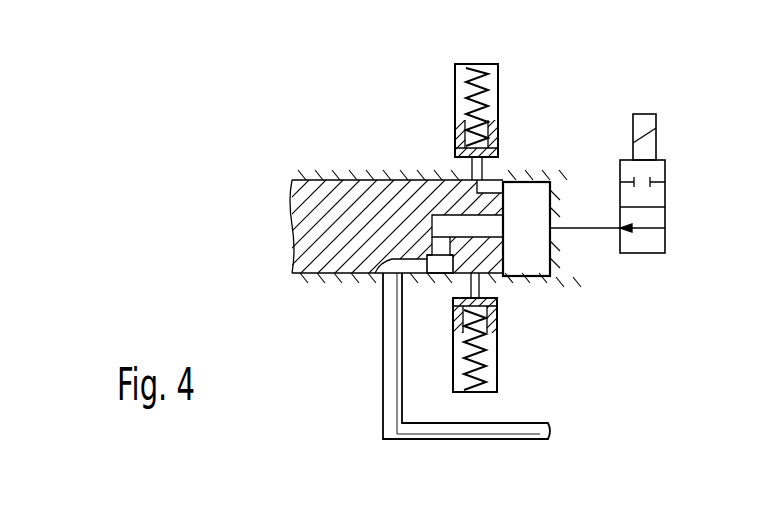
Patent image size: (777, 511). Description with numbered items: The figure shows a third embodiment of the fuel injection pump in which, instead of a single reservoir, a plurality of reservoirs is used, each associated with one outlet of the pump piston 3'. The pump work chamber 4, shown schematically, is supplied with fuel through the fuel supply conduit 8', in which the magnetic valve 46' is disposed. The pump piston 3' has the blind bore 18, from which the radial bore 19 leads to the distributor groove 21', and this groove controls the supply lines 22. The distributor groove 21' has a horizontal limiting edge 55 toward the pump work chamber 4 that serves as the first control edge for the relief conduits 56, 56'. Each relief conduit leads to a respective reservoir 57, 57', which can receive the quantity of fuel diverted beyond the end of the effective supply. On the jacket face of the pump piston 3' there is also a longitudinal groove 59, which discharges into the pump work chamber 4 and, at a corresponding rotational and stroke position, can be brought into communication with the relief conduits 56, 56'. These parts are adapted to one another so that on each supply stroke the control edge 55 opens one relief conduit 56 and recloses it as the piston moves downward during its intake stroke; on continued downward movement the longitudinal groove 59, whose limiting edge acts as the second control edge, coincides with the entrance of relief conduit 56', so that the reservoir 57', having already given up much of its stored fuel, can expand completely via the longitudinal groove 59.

The pump piston 3' is at (390, 228).
The pump work chamber 4 is at (545, 263).
The fuel supply conduit 8' is at (607, 253).
The blind bore 18 is at (468, 230).
The radial bore 19 is at (434, 246).
The distributor groove 21' is at (376, 293).
The supply lines 22 is at (390, 391).
The magnetic valve 46' is at (668, 183).
The limiting edge (first control edge) 55 is at (447, 262).
The relief conduit 56 is at (512, 300).
The relief conduit 56' is at (512, 147).
The reservoir 57 is at (498, 343).
The reservoir 57' is at (450, 111).
The longitudinal groove 59 is at (497, 188).